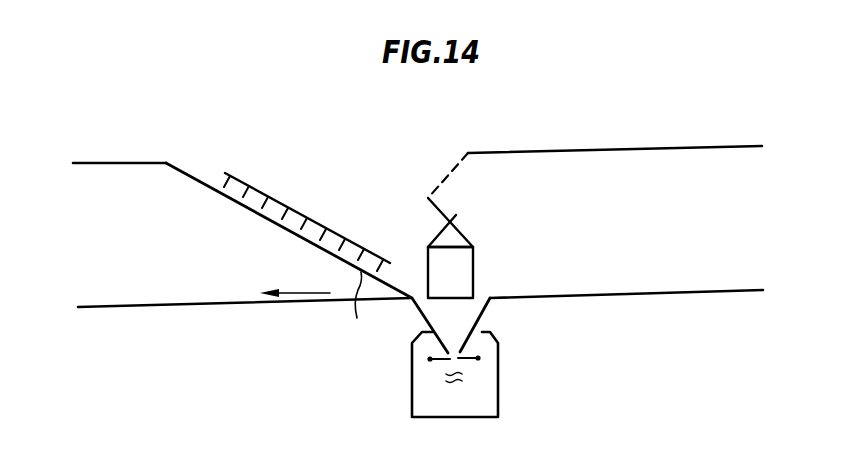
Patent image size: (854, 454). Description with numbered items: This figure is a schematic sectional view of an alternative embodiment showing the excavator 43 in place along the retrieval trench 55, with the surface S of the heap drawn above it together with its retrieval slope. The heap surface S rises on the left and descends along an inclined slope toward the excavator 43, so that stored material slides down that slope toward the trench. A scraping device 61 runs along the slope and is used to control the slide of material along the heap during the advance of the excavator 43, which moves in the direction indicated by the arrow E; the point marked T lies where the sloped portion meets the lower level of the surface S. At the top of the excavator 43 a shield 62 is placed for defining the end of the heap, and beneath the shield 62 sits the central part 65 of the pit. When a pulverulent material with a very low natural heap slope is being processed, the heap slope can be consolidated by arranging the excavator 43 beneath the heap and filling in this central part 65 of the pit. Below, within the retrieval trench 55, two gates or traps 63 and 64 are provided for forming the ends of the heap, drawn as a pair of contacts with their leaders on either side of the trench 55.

The surface of the heap S is at (138, 163).
The excavator 43 is at (275, 197).
The scraping device 61 is at (326, 237).
The transfer point T is at (354, 304).
The direction of advance E is at (295, 282).
The shield 62 is at (439, 204).
The central part of the pit 65 is at (473, 278).
The retrieval trench 55 is at (465, 418).
The gate or trap 63 is at (433, 363).
The gate or trap 64 is at (474, 362).